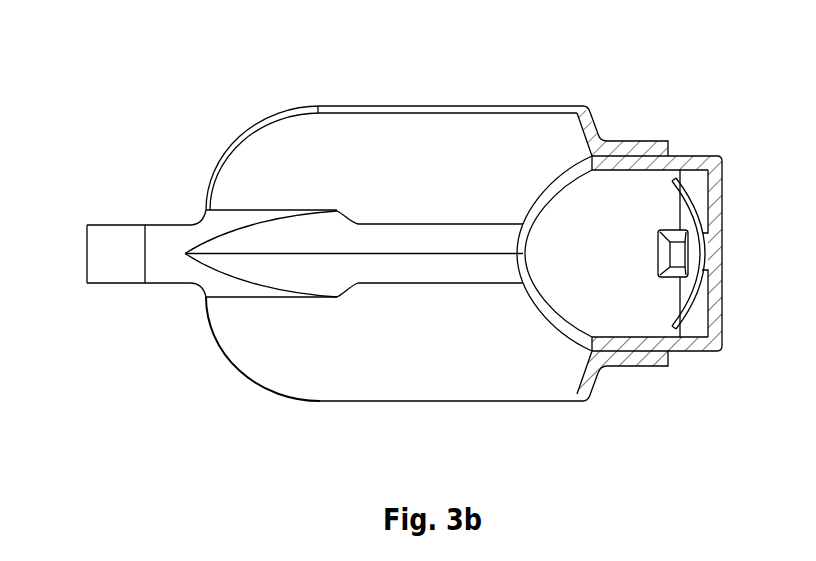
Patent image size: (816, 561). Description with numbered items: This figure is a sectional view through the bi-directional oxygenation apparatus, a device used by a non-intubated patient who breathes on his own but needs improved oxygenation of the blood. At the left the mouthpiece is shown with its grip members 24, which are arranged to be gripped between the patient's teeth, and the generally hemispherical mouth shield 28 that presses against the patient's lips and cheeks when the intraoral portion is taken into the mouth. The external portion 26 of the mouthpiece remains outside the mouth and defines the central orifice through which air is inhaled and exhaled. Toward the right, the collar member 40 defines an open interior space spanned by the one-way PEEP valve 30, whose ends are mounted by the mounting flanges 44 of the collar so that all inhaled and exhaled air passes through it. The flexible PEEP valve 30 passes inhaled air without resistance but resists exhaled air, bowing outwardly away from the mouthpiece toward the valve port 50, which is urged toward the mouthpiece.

The grip members 24 is at (103, 259).
The external portion 26 is at (632, 366).
The mouth shield 28 is at (425, 106).
The one-way PEEP valve 30 is at (693, 205).
The collar member 40 is at (648, 162).
The mounting flanges 44 is at (675, 254).
The valve port 50 is at (713, 204).